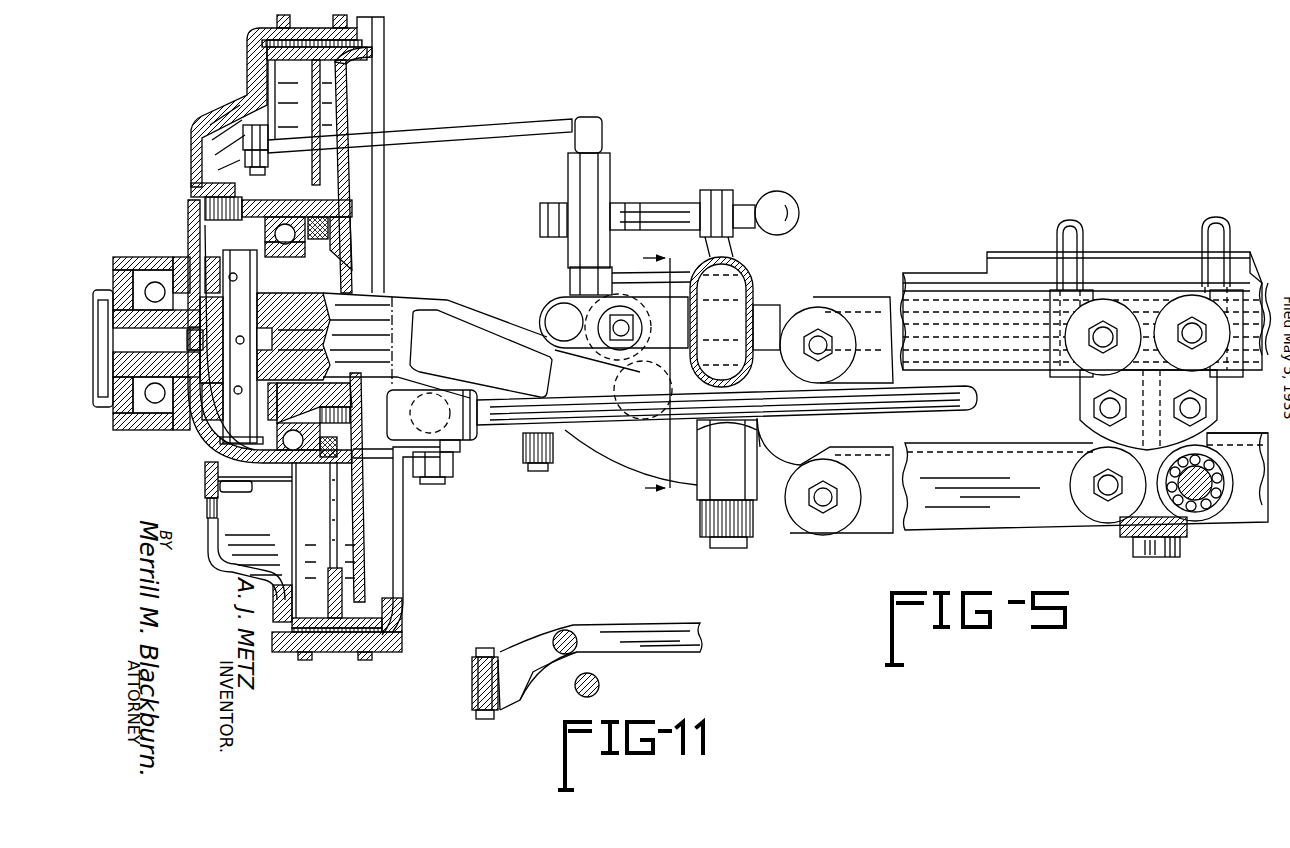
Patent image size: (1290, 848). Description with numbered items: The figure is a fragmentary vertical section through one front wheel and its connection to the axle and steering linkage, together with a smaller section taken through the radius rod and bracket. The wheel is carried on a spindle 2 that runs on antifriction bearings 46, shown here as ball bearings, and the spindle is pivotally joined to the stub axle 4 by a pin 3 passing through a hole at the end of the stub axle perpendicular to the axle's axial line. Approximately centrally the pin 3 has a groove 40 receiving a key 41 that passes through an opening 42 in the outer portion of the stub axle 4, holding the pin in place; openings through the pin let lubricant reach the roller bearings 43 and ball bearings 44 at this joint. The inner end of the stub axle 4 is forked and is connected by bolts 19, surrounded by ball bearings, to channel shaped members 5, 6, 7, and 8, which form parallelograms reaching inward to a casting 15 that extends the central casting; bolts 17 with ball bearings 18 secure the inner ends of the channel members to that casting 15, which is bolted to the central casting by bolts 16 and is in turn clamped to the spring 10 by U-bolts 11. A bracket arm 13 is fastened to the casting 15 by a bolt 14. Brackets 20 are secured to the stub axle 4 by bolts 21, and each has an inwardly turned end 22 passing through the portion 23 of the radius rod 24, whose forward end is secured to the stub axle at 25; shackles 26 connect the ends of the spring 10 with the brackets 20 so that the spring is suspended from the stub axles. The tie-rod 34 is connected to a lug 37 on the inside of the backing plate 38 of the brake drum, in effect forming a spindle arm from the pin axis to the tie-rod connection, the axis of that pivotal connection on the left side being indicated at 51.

In FIG. 5, the spindle 2 is at (148, 343).
In FIG. 5, the pin 3 is at (234, 347).
In FIG. 5, the stub axle 4 is at (418, 308).
In FIG. 11, the stub axle 4 is at (477, 687).
In FIG. 5, the channel shaped member 5 is at (1086, 311).
In FIG. 5, the channel shaped member 6 is at (1086, 481).
In FIG. 5, the channel shaped member 7 is at (1254, 352).
In FIG. 5, the channel shaped member 8 is at (1240, 447).
In FIG. 5, the spring 10 is at (1007, 252).
In FIG. 5, the U-bolt 11 is at (1214, 220).
In FIG. 5, the bracket arm 13 is at (1130, 538).
In FIG. 5, the bolt 14 is at (1160, 548).
In FIG. 5, the casting 15 is at (1143, 558).
In FIG. 5, the bolt 16 is at (1098, 409).
In FIG. 5, the bolt 17 is at (1190, 331).
In FIG. 5, the ball bearing 18 is at (1222, 497).
In FIG. 5, the bolt 19 is at (820, 343).
In FIG. 5, the bracket 20 is at (552, 300).
In FIG. 5, the bolt 21 is at (538, 471).
In FIG. 5, the inwardly turned end 22 is at (634, 356).
In FIG. 11, the inwardly turned end 22 is at (568, 631).
In FIG. 5, the portion of the radius rod 23 is at (750, 278).
In FIG. 11, the portion of the radius rod 23 is at (543, 627).
In FIG. 5, the radius rod 24 is at (712, 440).
In FIG. 11, the radius rod 24 is at (707, 637).
In FIG. 5, the connection of radius rod to stub axle 25 is at (730, 550).
In FIG. 11, the connection of radius rod to stub axle 25 is at (480, 647).
In FIG. 5, the shackle 26 is at (615, 355).
In FIG. 5, the tie-rod section 34 is at (978, 403).
In FIG. 11, the tie-rod section 34 is at (600, 687).
In FIG. 5, the lug 37 is at (460, 450).
In FIG. 5, the backing plate 38 is at (403, 545).
In FIG. 5, the groove 40 is at (233, 358).
In FIG. 5, the key 41 is at (320, 336).
In FIG. 5, the opening 42 is at (320, 312).
In FIG. 5, the roller bearing 43 is at (188, 236).
In FIG. 5, the ball bearing 44 is at (187, 407).
In FIG. 5, the antifriction bearing 46 is at (290, 224).
In FIG. 5, the axis of pivotal connection 51 is at (445, 482).